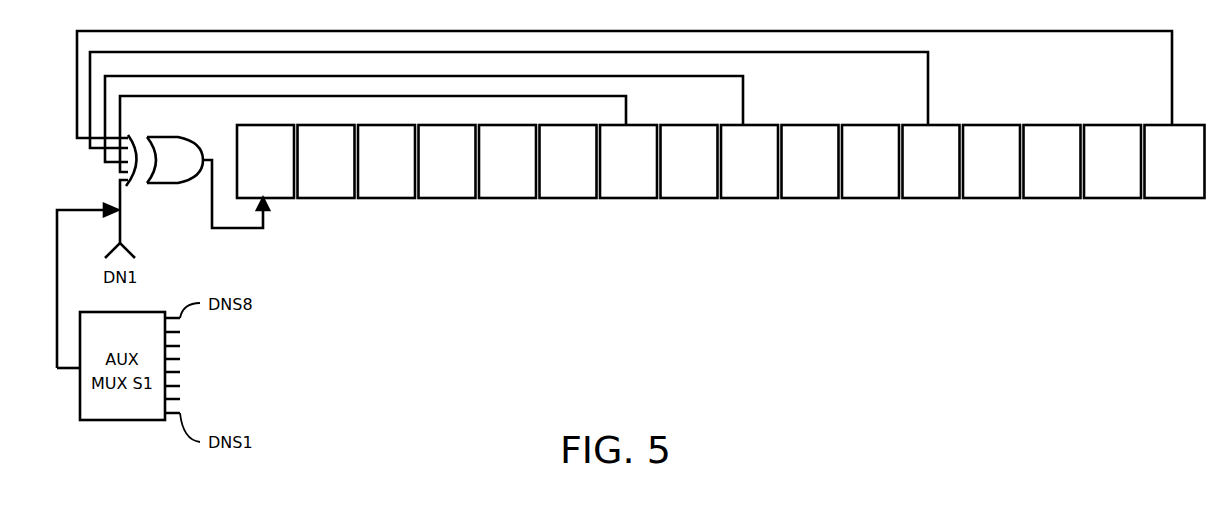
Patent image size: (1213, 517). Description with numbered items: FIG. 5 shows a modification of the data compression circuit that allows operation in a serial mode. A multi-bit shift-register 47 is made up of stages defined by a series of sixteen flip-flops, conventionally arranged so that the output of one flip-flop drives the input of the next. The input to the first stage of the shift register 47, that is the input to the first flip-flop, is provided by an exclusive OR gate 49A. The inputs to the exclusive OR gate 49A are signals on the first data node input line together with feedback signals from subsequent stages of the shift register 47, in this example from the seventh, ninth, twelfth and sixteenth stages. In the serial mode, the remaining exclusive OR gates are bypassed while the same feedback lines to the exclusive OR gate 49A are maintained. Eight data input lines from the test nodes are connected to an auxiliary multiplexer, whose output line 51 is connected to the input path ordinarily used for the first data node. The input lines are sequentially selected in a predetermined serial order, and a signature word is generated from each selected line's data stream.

The multi-bit shift-register 47 is at (670, 210).
The exclusive OR gate 49A is at (185, 172).
The output line 51 is at (78, 210).